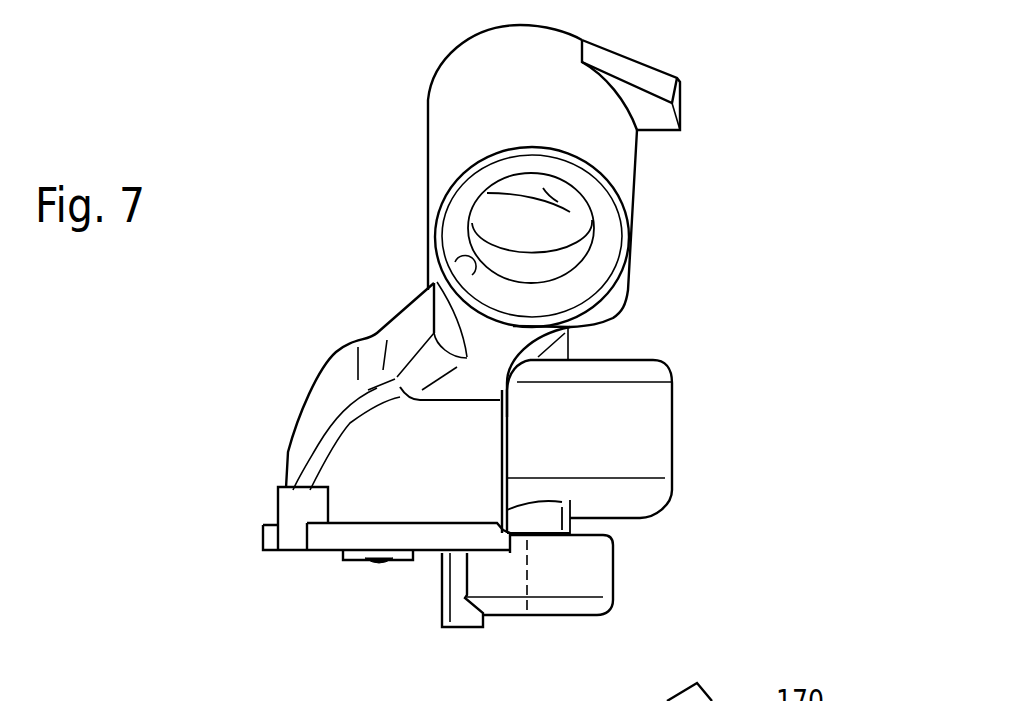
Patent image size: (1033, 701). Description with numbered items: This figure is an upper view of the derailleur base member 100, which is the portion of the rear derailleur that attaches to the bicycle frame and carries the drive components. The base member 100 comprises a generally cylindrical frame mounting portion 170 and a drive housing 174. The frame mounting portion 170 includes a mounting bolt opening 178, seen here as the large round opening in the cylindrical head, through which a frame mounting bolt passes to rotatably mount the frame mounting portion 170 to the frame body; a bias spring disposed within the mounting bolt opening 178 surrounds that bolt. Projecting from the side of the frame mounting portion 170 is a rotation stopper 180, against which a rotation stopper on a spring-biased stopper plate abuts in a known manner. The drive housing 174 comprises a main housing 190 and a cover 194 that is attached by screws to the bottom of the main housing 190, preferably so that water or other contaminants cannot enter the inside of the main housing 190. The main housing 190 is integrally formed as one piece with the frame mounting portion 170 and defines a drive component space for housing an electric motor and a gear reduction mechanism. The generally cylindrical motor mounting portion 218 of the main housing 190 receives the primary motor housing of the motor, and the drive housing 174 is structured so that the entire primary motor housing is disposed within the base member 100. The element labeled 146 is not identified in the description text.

The base member 100 is at (318, 270).
The frame mounting portion 170 is at (450, 100).
The rotation stopper 180 is at (647, 80).
The mounting bolt opening 178 is at (570, 212).
The main housing 190 is at (377, 484).
The drive housing 174 is at (268, 472).
The motor mounting portion 218 is at (640, 373).
The cover 194 is at (370, 542).
The mounting post 146 is at (462, 612).